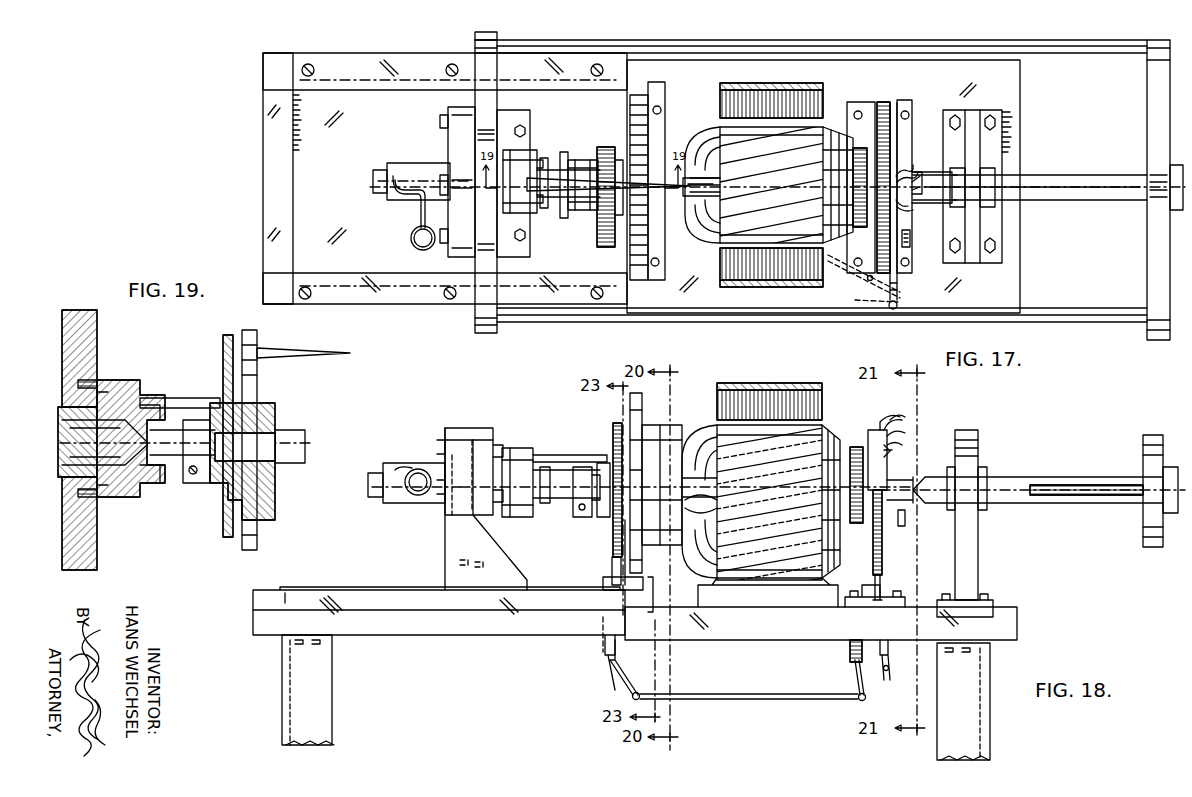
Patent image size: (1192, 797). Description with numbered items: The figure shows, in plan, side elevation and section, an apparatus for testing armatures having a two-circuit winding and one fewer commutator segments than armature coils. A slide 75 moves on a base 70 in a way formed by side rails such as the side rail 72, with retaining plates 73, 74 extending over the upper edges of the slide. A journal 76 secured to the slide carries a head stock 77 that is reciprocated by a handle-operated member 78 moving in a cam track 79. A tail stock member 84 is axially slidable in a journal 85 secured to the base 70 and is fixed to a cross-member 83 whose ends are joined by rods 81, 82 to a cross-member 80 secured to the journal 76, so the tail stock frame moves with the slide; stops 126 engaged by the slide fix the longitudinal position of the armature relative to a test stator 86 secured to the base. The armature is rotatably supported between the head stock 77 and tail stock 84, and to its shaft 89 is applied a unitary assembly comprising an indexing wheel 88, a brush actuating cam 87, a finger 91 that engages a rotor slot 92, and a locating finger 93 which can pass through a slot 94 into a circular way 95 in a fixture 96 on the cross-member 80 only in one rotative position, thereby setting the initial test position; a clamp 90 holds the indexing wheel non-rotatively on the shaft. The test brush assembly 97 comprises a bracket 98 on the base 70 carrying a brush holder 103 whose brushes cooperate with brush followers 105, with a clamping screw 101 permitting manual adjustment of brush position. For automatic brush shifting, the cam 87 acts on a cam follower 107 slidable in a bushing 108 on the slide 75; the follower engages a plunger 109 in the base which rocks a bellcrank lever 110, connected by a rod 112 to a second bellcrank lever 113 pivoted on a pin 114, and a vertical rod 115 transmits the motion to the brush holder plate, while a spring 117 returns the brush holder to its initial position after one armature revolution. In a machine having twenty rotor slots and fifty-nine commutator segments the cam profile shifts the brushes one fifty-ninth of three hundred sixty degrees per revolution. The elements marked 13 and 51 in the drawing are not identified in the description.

In FIG. 17, the motor 13 is at (857, 228).
In FIG. 18, the motor 13 is at (835, 543).
In FIG. 17, the motor end windings 51 is at (690, 125).
In FIG. 18, the motor end windings 51 is at (685, 520).
In FIG. 17, the base 70 is at (965, 67).
In FIG. 18, the base 70 is at (1013, 632).
In FIG. 18, the side rail 72 is at (412, 600).
In FIG. 17, the retaining plate 73 is at (393, 62).
In FIG. 17, the retaining plate 74 is at (462, 298).
In FIG. 18, the retaining plate 74 is at (365, 590).
In FIG. 17, the slide 75 is at (313, 150).
In FIG. 17, the journal 76 is at (457, 145).
In FIG. 18, the journal 76 is at (457, 532).
In FIG. 17, the head stock 77 is at (380, 173).
In FIG. 18, the head stock 77 is at (375, 497).
In FIG. 19, the head stock 77 is at (100, 435).
In FIG. 17, the handle-operated member 78 is at (418, 250).
In FIG. 18, the handle-operated member 78 is at (410, 478).
In FIG. 17, the cam track 79 is at (405, 191).
In FIG. 18, the cam track 79 is at (413, 470).
In FIG. 17, the cross-member 80 is at (480, 40).
In FIG. 18, the cross-member 80 is at (480, 437).
In FIG. 19, the cross-member 80 is at (92, 340).
In FIG. 17, the rod 81 is at (560, 42).
In FIG. 17, the rod 82 is at (1095, 322).
In FIG. 18, the rod 82 is at (1095, 495).
In FIG. 17, the cross-member 83 is at (1155, 92).
In FIG. 18, the cross-member 83 is at (1145, 462).
In FIG. 17, the tail stock member 84 is at (1080, 192).
In FIG. 18, the tail stock member 84 is at (1012, 482).
In FIG. 17, the journal 85 is at (975, 155).
In FIG. 18, the journal 85 is at (968, 562).
In FIG. 17, the test stator 86 is at (765, 83).
In FIG. 18, the test stator 86 is at (785, 385).
In FIG. 17, the brush actuating cam 87 is at (612, 233).
In FIG. 18, the brush actuating cam 87 is at (613, 440).
In FIG. 19, the brush actuating cam 87 is at (228, 350).
In FIG. 17, the indexing wheel 88 is at (640, 95).
In FIG. 18, the indexing wheel 88 is at (656, 483).
In FIG. 19, the indexing wheel 88 is at (252, 545).
In FIG. 17, the armature shaft 89 is at (556, 173).
In FIG. 18, the armature shaft 89 is at (563, 500).
In FIG. 19, the armature shaft 89 is at (295, 455).
In FIG. 18, the clamp 90 is at (583, 516).
In FIG. 19, the clamp 90 is at (198, 482).
In FIG. 17, the finger 91 is at (683, 190).
In FIG. 18, the finger 91 is at (690, 430).
In FIG. 19, the finger 91 is at (315, 358).
In FIG. 17, the rotor slot 92 is at (857, 148).
In FIG. 18, the rotor slot 92 is at (822, 428).
In FIG. 17, the locating finger 93 is at (545, 200).
In FIG. 18, the locating finger 93 is at (555, 458).
In FIG. 19, the locating finger 93 is at (190, 402).
In FIG. 17, the slot 94 is at (540, 215).
In FIG. 19, the slot 94 is at (135, 400).
In FIG. 19, the circular way 95 is at (160, 483).
In FIG. 17, the fixture 96 is at (520, 157).
In FIG. 18, the fixture 96 is at (515, 450).
In FIG. 19, the fixture 96 is at (125, 490).
In FIG. 17, the test brush assembly 97 is at (895, 105).
In FIG. 17, the bracket 98 is at (908, 128).
In FIG. 18, the bracket 98 is at (870, 605).
In FIG. 17, the clamping screw 101 is at (912, 240).
In FIG. 18, the clamping screw 101 is at (902, 530).
In FIG. 17, the brush holder 103 is at (912, 178).
In FIG. 18, the brush holder 103 is at (880, 440).
In FIG. 18, the brush followers 105 is at (888, 452).
In FIG. 18, the cam follower 107 is at (615, 568).
In FIG. 18, the bushing 108 is at (632, 585).
In FIG. 18, the plunger 109 is at (605, 645).
In FIG. 18, the bellcrank lever 110 is at (622, 678).
In FIG. 17, the rod 112 is at (851, 265).
In FIG. 18, the rod 112 is at (705, 697).
In FIG. 17, the second bellcrank lever 113 is at (897, 288).
In FIG. 18, the second bellcrank lever 113 is at (858, 690).
In FIG. 18, the pin 114 is at (855, 645).
In FIG. 18, the vertical rod 115 is at (884, 660).
In FIG. 17, the spring 117 is at (900, 303).
In FIG. 18, the spring 117 is at (872, 563).
In FIG. 17, the stops 126 is at (659, 108).
In FIG. 18, the stops 126 is at (625, 595).